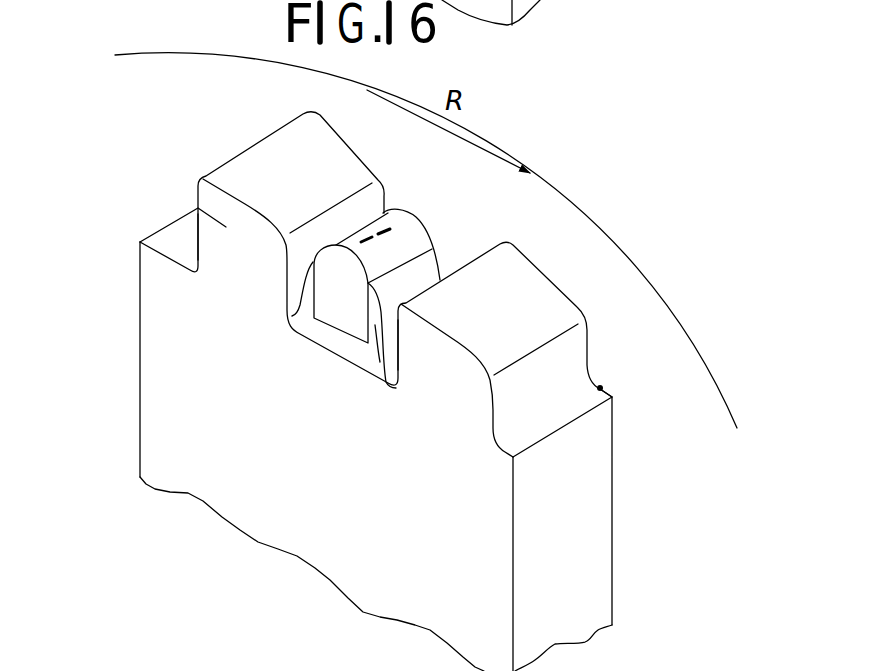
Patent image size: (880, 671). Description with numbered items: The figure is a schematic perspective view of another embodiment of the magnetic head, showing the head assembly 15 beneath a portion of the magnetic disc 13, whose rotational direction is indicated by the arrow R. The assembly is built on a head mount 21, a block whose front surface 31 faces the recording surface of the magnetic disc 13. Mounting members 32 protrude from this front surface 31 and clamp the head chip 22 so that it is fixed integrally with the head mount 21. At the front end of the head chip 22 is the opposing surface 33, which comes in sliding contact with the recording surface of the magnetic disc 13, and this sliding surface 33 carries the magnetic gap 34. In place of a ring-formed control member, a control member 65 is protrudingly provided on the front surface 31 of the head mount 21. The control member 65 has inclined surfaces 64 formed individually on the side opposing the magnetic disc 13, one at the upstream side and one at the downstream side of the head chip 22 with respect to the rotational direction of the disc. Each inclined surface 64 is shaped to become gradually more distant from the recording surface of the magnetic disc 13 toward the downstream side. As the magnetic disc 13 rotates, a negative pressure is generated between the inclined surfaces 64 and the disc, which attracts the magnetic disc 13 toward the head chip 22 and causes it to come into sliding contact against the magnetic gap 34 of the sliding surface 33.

The magnetic disc 13 is at (685, 328).
The block segment 15 is at (126, 309).
The head mount 21 is at (577, 548).
The head chip 22 is at (347, 303).
The front surface 31 is at (600, 388).
The mounting members 32 is at (380, 385).
The opposing surface 33 is at (412, 238).
The magnetic gap 34 is at (388, 226).
The inclined surfaces 64 is at (312, 188).
The control member 65 is at (194, 210).